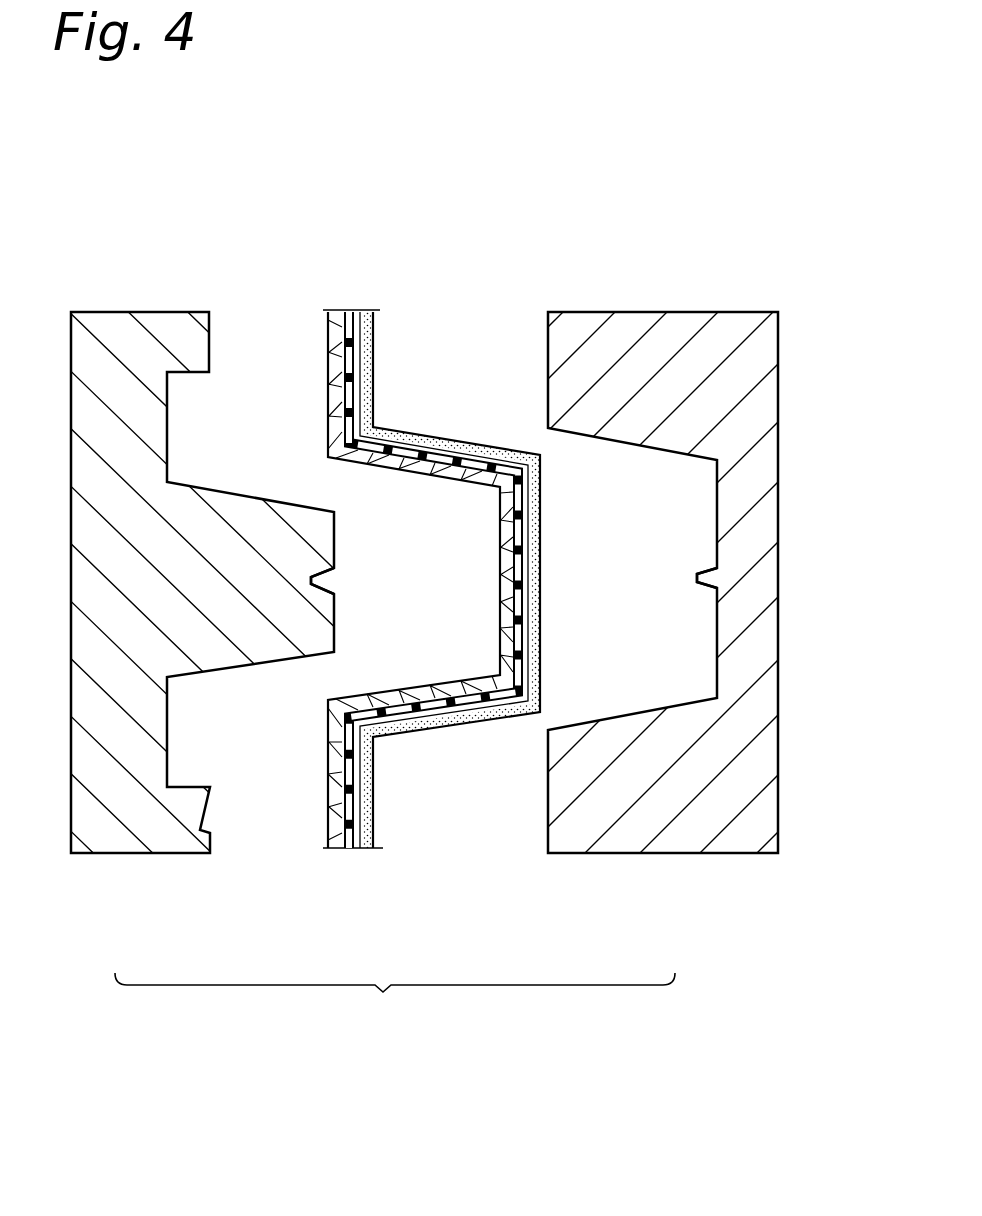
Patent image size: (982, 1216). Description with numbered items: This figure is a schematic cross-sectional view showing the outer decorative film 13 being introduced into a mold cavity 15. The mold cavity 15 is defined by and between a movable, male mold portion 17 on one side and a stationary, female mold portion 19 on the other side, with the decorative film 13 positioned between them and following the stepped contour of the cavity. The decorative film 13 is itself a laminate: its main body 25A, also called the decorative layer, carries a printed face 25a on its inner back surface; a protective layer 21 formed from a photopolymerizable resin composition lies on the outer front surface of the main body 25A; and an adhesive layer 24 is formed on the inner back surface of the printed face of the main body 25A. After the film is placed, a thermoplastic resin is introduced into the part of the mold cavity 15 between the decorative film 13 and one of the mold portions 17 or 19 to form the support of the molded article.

The outer decorative film 13 is at (507, 579).
The mold cavity 15 is at (335, 598).
The movable mold portion 17 is at (147, 822).
The stationary mold portion 19 is at (660, 822).
The protective layer 21 is at (535, 618).
The adhesive layer 24 is at (638, 657).
The printed face 25a is at (515, 567).
The main body 25A is at (525, 600).